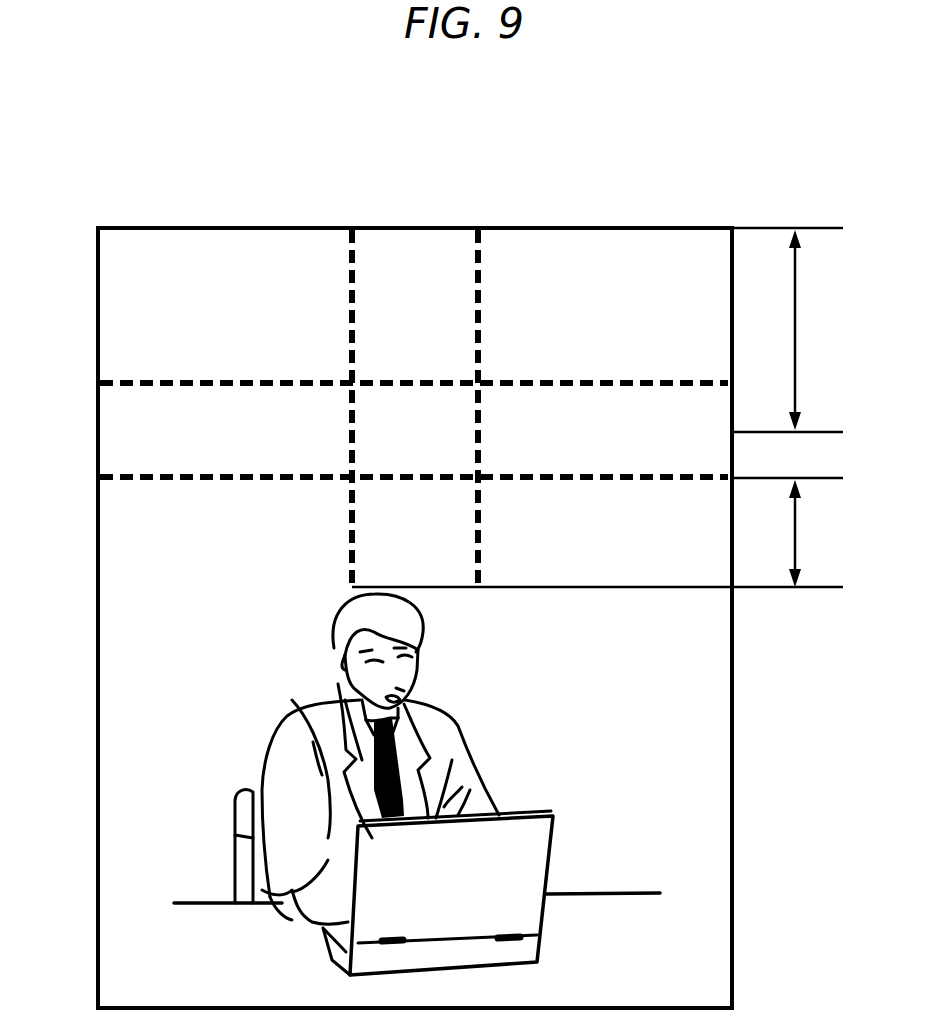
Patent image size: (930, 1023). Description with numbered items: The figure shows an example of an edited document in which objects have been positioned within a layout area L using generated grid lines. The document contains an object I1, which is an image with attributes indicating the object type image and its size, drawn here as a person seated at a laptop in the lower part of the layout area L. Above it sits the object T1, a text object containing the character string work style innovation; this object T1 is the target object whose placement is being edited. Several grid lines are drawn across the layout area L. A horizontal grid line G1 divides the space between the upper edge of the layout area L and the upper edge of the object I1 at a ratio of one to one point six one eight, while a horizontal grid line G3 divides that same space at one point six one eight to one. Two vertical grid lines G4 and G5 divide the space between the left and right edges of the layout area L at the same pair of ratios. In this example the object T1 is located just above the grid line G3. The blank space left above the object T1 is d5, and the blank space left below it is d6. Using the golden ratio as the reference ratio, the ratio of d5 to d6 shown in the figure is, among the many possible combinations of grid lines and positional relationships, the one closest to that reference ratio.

The layout area L is at (732, 669).
The object I1 is at (587, 822).
The object T1 is at (124, 451).
The grid line G1 is at (693, 382).
The grid line G3 is at (687, 478).
The grid line G4 is at (352, 228).
The grid line G5 is at (478, 228).
The blank space d5 is at (812, 330).
The blank space d6 is at (812, 533).